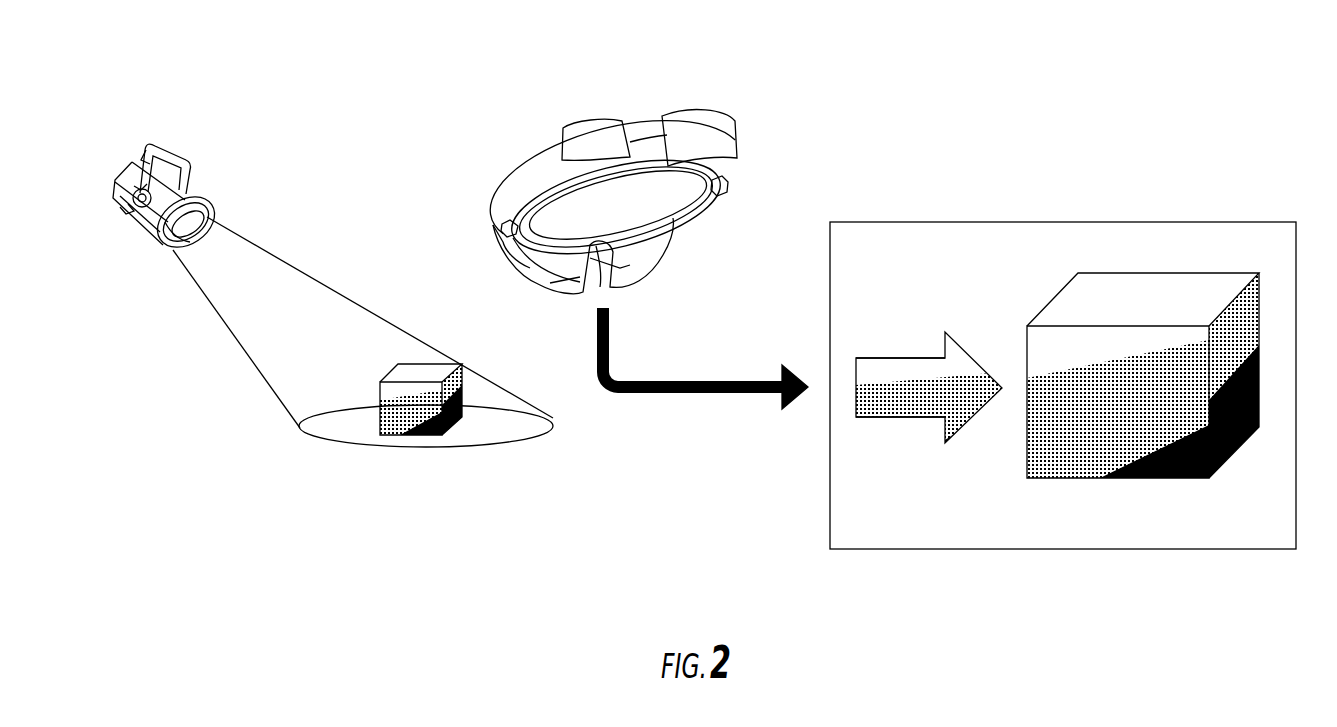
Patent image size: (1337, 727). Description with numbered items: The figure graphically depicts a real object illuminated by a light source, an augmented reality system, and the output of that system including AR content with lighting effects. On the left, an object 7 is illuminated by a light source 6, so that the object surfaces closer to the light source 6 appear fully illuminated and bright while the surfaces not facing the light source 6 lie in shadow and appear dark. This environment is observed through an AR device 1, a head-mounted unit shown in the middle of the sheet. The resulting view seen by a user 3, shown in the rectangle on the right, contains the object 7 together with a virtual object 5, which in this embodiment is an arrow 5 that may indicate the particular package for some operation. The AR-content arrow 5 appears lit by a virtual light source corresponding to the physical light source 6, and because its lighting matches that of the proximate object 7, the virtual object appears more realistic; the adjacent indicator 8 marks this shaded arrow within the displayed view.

The AR device 1 is at (641, 104).
The user 3 is at (827, 270).
The virtual object (AR content arrow) 5 is at (896, 422).
The light source 6 is at (176, 146).
The object 7 is at (426, 360).
The arrow indicator 8 is at (918, 384).